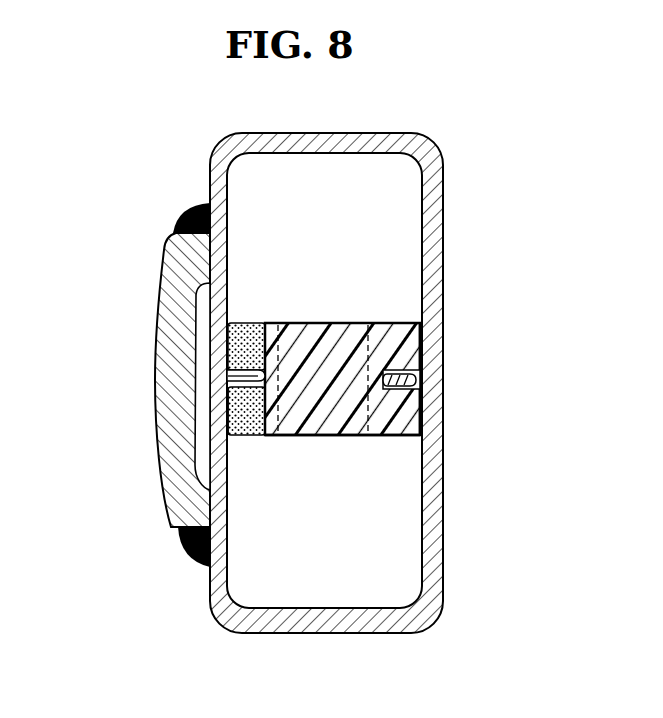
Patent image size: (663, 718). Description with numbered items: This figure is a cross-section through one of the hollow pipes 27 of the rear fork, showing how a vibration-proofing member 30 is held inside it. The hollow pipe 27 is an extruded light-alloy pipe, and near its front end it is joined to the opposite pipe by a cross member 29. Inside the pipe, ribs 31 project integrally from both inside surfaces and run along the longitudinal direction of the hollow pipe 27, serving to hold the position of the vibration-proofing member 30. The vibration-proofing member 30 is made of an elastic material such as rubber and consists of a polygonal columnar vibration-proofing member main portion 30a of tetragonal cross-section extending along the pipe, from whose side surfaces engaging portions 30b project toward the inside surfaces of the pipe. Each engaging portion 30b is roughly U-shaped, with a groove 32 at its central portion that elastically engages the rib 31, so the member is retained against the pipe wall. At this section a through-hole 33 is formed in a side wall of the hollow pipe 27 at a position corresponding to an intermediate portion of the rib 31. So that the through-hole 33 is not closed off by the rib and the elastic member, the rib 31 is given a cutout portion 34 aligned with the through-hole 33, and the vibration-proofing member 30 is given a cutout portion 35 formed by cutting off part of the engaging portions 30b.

The hollow pipe 27 is at (347, 134).
The cross member 29 is at (160, 393).
The vibration-proofing member 30 is at (322, 370).
The vibration-proofing member main portion 30a is at (316, 437).
The engaging portion 30b is at (422, 325).
The rib 31 is at (230, 376).
The groove 32 is at (225, 348).
The through-hole 33 is at (205, 360).
The cutout portion 34 is at (245, 322).
The cutout portion 35 is at (247, 437).